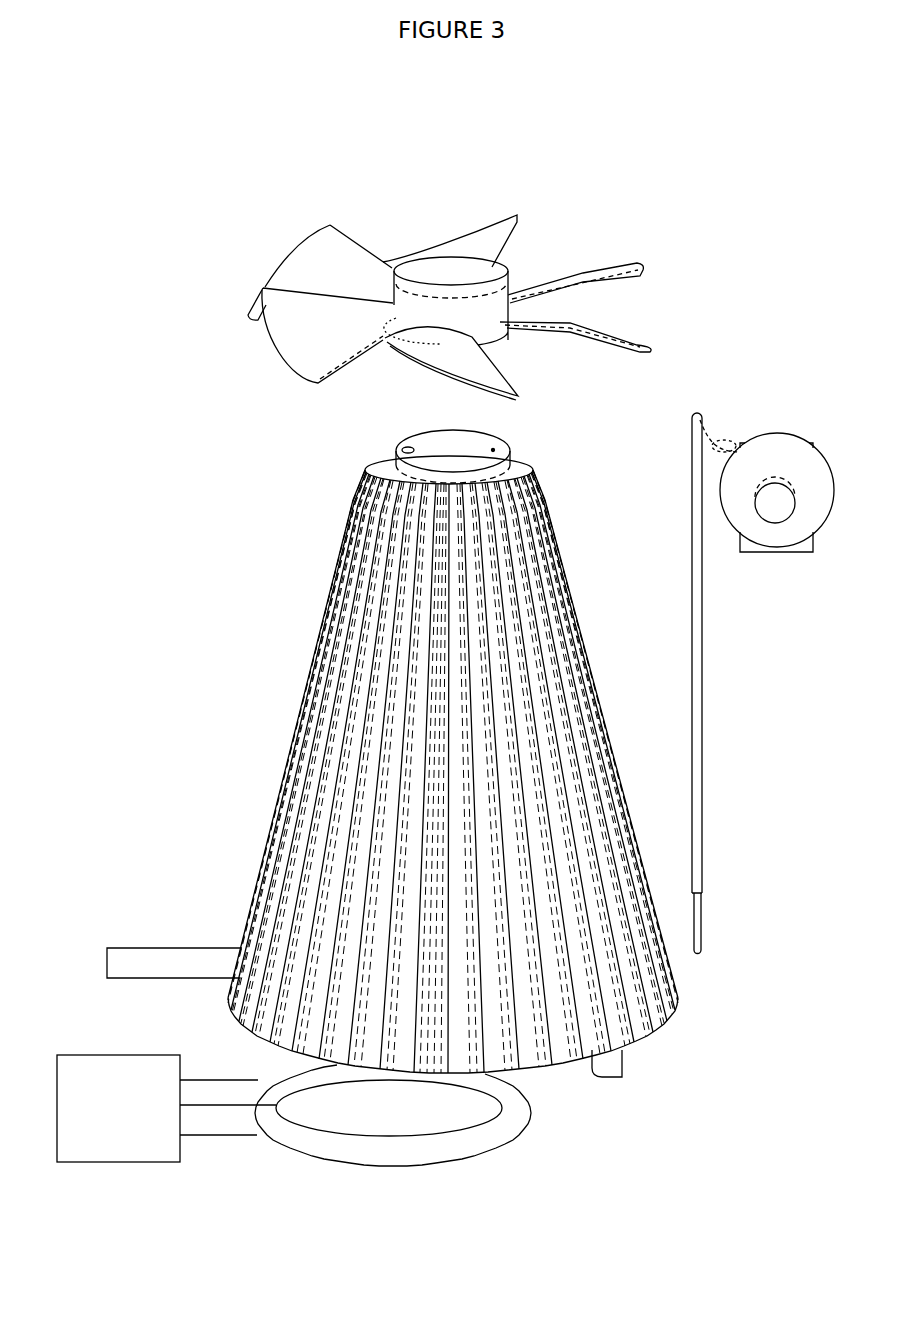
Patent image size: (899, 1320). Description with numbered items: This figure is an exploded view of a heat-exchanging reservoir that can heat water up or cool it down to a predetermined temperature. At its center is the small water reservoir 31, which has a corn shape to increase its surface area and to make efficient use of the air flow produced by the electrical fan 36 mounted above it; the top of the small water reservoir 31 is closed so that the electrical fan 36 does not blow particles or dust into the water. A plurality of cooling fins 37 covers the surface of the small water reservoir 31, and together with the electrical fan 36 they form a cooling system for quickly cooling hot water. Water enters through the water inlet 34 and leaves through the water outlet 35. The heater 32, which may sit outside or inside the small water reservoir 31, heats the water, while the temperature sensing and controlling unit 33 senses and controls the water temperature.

The small water reservoir 31 is at (440, 442).
The heater 32 is at (128, 1117).
The temperature sensing and controlling unit 33 is at (718, 556).
The water inlet 34 is at (222, 967).
The water outlet 35 is at (610, 1063).
The electrical fan 36 is at (490, 275).
The cooling fins 37 is at (642, 1008).